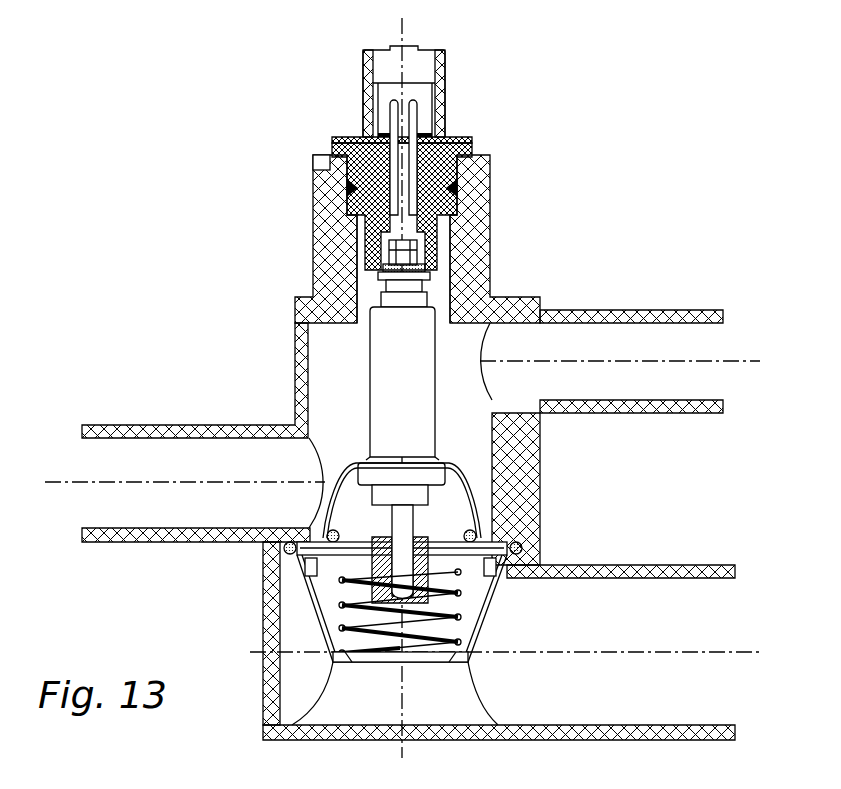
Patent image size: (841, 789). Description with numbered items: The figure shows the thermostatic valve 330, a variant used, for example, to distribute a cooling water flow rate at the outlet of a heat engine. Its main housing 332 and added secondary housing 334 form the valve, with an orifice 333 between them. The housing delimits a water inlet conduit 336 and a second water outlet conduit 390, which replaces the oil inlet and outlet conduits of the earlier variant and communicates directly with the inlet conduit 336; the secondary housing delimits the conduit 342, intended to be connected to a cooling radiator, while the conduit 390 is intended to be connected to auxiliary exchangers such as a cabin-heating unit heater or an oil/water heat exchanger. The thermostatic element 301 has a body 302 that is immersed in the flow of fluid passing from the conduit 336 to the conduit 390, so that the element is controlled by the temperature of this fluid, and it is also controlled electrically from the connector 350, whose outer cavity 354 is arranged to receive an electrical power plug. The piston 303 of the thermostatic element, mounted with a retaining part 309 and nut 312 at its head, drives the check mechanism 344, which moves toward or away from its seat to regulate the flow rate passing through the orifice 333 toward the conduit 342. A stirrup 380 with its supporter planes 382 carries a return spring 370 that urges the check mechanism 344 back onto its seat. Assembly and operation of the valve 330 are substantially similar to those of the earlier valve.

The thermostatic element 301 is at (372, 385).
The body 302 is at (428, 392).
The piston 303 is at (322, 525).
The retaining washer 309 is at (432, 292).
The adjusting nut 312 is at (435, 250).
The valve 330 is at (213, 581).
The body wall 332 is at (520, 442).
The seat flange 333 is at (537, 555).
The lower housing 334 is at (625, 567).
The inlet conduit 336 is at (196, 432).
The conduit 342 is at (499, 652).
The guide block 344 is at (307, 603).
The connector 350 is at (468, 143).
The connector cap 354 is at (412, 58).
The spring 370 is at (470, 606).
The spring cage 380 is at (478, 615).
The spring retainer 382 is at (470, 650).
The second water outlet conduit 390 is at (631, 361).